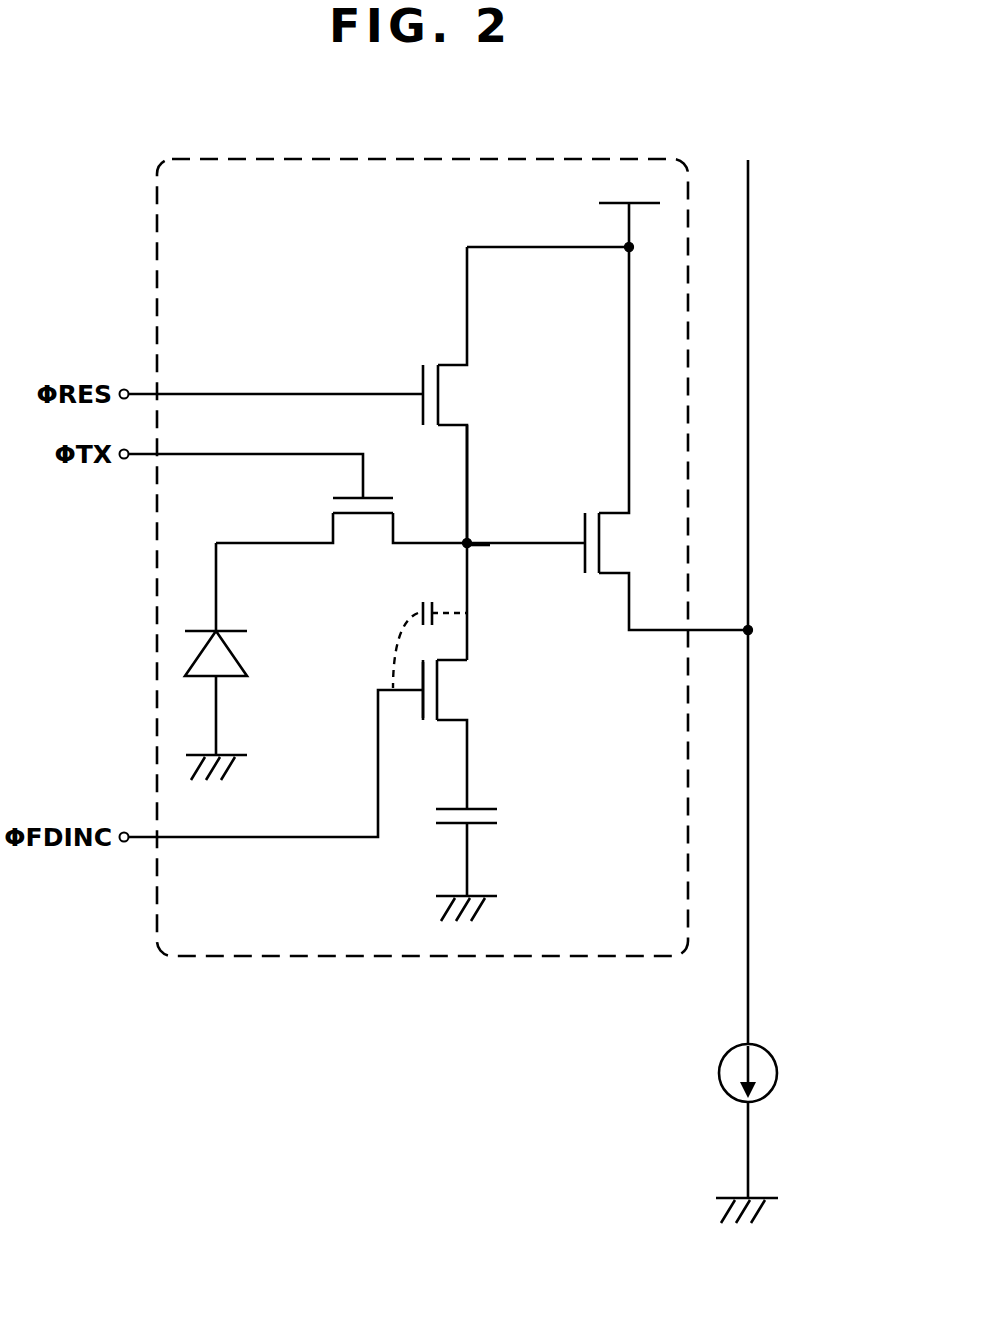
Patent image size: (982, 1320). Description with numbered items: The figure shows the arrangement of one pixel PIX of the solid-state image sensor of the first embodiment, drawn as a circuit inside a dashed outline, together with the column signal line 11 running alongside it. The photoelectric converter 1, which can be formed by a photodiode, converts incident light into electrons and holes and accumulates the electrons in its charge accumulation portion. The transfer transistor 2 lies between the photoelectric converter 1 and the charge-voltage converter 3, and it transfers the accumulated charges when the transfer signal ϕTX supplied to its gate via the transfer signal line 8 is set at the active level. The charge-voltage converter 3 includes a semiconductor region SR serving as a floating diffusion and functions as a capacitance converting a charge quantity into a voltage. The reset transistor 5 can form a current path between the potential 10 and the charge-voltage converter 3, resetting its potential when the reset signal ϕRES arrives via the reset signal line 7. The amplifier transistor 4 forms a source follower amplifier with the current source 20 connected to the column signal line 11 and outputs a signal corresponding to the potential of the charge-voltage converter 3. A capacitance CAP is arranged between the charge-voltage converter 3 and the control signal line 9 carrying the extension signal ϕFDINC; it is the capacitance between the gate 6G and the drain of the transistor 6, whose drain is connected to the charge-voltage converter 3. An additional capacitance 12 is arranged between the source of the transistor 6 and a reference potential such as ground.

The photoelectric converter 1 is at (246, 653).
The transfer transistor 2 is at (325, 513).
The charge-voltage converter 3 is at (530, 619).
The amplifier transistor 4 is at (590, 498).
The reset transistor 5 is at (475, 397).
The transistor 6 is at (468, 690).
The gate 6G is at (420, 700).
The reset signal line 7 is at (207, 393).
The transfer signal line 8 is at (193, 456).
The control signal line 9 is at (200, 839).
The potential 10 is at (590, 202).
The column signal line 11 is at (748, 830).
The additional capacitance 12 is at (510, 818).
The current source 20 is at (780, 1075).
The pixel PIX is at (420, 158).
The capacitance CAP is at (413, 605).
The semiconductor region SR is at (490, 545).